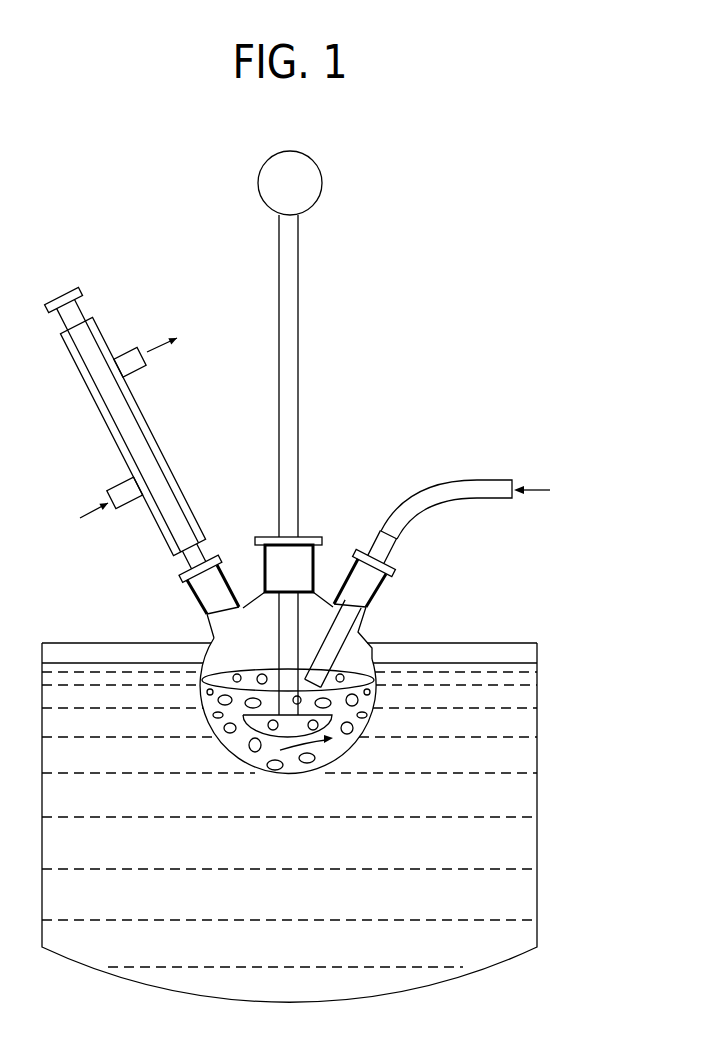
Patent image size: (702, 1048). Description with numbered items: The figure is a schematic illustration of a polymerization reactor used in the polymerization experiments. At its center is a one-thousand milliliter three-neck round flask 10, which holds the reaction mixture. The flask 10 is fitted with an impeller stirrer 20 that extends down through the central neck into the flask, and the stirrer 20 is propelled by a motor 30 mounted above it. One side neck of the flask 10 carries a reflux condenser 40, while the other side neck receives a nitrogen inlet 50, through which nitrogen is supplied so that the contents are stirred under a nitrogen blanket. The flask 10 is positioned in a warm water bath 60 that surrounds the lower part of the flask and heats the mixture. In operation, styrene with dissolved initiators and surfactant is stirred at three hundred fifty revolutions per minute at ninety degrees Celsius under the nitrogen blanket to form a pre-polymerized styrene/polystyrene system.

The three-neck round flask 10 is at (350, 748).
The impeller stirrer 20 is at (293, 323).
The motor 30 is at (257, 183).
The reflux condenser 40 is at (97, 408).
The nitrogen inlet 50 is at (457, 483).
The warm water bath 60 is at (502, 837).